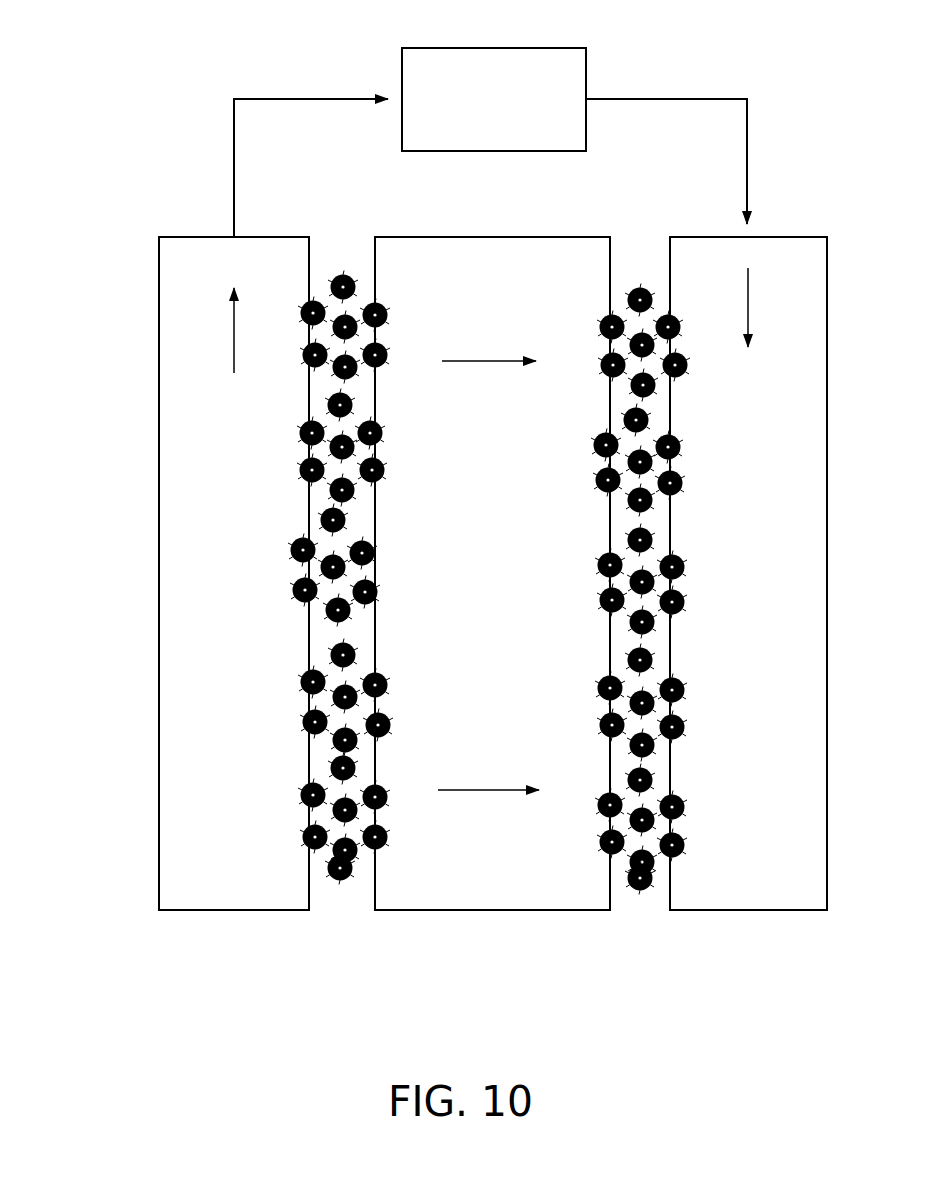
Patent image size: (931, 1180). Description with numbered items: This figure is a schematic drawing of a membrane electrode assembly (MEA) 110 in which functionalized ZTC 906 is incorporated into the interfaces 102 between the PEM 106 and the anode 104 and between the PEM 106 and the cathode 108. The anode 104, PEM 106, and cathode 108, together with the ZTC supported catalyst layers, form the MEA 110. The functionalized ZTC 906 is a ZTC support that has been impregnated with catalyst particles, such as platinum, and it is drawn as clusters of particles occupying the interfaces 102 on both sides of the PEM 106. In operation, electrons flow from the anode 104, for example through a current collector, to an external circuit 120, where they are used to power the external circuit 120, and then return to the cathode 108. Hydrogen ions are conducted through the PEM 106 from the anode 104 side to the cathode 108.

The membrane electrode assembly 110 is at (435, 587).
The anode 104 is at (233, 913).
The PEM 106 is at (490, 913).
The cathode 108 is at (746, 913).
The external circuit 120 is at (464, 27).
The functionalized ZTC 906 is at (343, 246).
The interfaces 102 is at (601, 647).